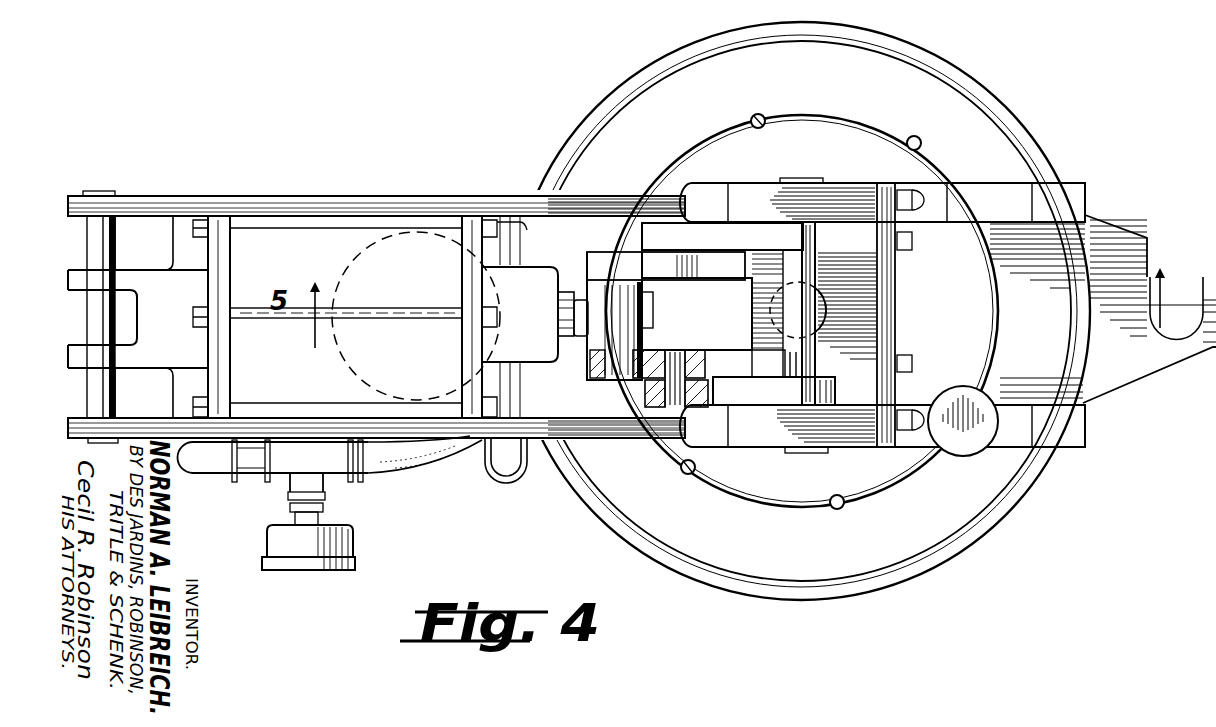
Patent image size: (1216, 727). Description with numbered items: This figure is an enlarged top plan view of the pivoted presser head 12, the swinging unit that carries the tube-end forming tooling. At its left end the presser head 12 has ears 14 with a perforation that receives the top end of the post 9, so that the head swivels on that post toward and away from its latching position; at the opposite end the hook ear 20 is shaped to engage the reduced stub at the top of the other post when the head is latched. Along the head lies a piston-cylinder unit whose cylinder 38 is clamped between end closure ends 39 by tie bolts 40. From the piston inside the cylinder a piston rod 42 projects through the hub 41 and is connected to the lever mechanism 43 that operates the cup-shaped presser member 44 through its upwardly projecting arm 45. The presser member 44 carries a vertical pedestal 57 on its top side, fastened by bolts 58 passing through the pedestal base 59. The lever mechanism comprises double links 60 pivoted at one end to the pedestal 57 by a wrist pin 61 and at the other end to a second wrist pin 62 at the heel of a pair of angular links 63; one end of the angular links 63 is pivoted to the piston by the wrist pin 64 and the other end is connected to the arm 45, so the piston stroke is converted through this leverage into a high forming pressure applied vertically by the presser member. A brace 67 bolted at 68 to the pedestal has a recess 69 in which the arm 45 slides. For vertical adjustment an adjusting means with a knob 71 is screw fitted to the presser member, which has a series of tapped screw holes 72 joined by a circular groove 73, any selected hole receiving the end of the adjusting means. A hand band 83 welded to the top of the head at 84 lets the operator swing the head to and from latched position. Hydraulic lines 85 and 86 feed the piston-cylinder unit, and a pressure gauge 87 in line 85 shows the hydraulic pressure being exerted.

The post 9 is at (355, 247).
The presser head 12 is at (851, 164).
The ears 14 is at (610, 180).
The hook ear 20 is at (1128, 250).
The cylinder 38 is at (408, 247).
The end closure ends 39 is at (222, 262).
The tie bolts 40 is at (298, 212).
The hub 41 is at (532, 276).
The piston rod 42 is at (572, 300).
The lever mechanism 43 is at (740, 230).
The presser member 44 is at (960, 118).
The arm 45 is at (775, 315).
The pedestal 57 is at (838, 195).
The bolts 58 is at (918, 196).
The pedestal base 59 is at (930, 212).
The double links 60 is at (672, 236).
The wrist pin 61 is at (816, 360).
The wrist pin 62 is at (678, 358).
The angular links 63 is at (602, 375).
The wrist pin 64 is at (614, 364).
The brace 67 is at (886, 306).
The bolt 68 is at (906, 369).
The recess 69 is at (772, 302).
The knob 71 is at (982, 410).
The tapped screw holes 72 is at (760, 115).
The circular groove 73 is at (737, 497).
The hand band 83 is at (990, 532).
The weld 84 is at (1072, 447).
The line 85 is at (392, 475).
The line 86 is at (468, 458).
The pressure gauge 87 is at (340, 548).